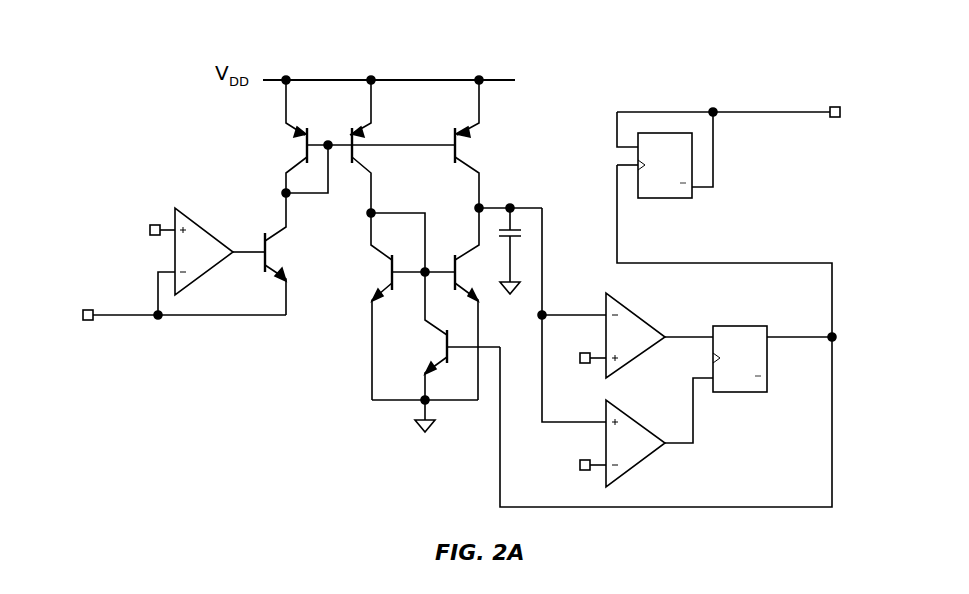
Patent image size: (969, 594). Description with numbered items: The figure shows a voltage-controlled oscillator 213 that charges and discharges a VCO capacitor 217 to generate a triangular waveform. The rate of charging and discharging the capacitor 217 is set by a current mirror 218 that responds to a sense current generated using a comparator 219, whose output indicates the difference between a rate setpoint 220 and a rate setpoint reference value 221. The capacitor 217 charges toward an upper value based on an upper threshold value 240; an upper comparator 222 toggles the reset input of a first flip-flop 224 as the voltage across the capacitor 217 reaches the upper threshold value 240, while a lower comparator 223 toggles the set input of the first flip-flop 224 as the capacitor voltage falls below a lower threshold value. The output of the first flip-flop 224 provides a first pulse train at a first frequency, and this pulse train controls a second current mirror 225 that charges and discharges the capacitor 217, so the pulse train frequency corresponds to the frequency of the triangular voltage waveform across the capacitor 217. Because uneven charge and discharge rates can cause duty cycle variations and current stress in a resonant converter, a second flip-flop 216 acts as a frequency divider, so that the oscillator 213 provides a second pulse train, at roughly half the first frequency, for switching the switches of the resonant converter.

The voltage-controlled oscillator 213 is at (384, 40).
The second flip-flop 216 is at (661, 199).
The VCO capacitor 217 is at (512, 224).
The current mirror 218 is at (266, 160).
The comparator 219 is at (195, 281).
The rate setpoint 220 is at (47, 325).
The rate setpoint reference value 221 is at (127, 176).
The upper comparator 222 is at (636, 462).
The lower comparator 223 is at (644, 323).
The first flip-flop 224 is at (722, 394).
The second current mirror 225 is at (348, 357).
The upper threshold value 240 is at (586, 473).